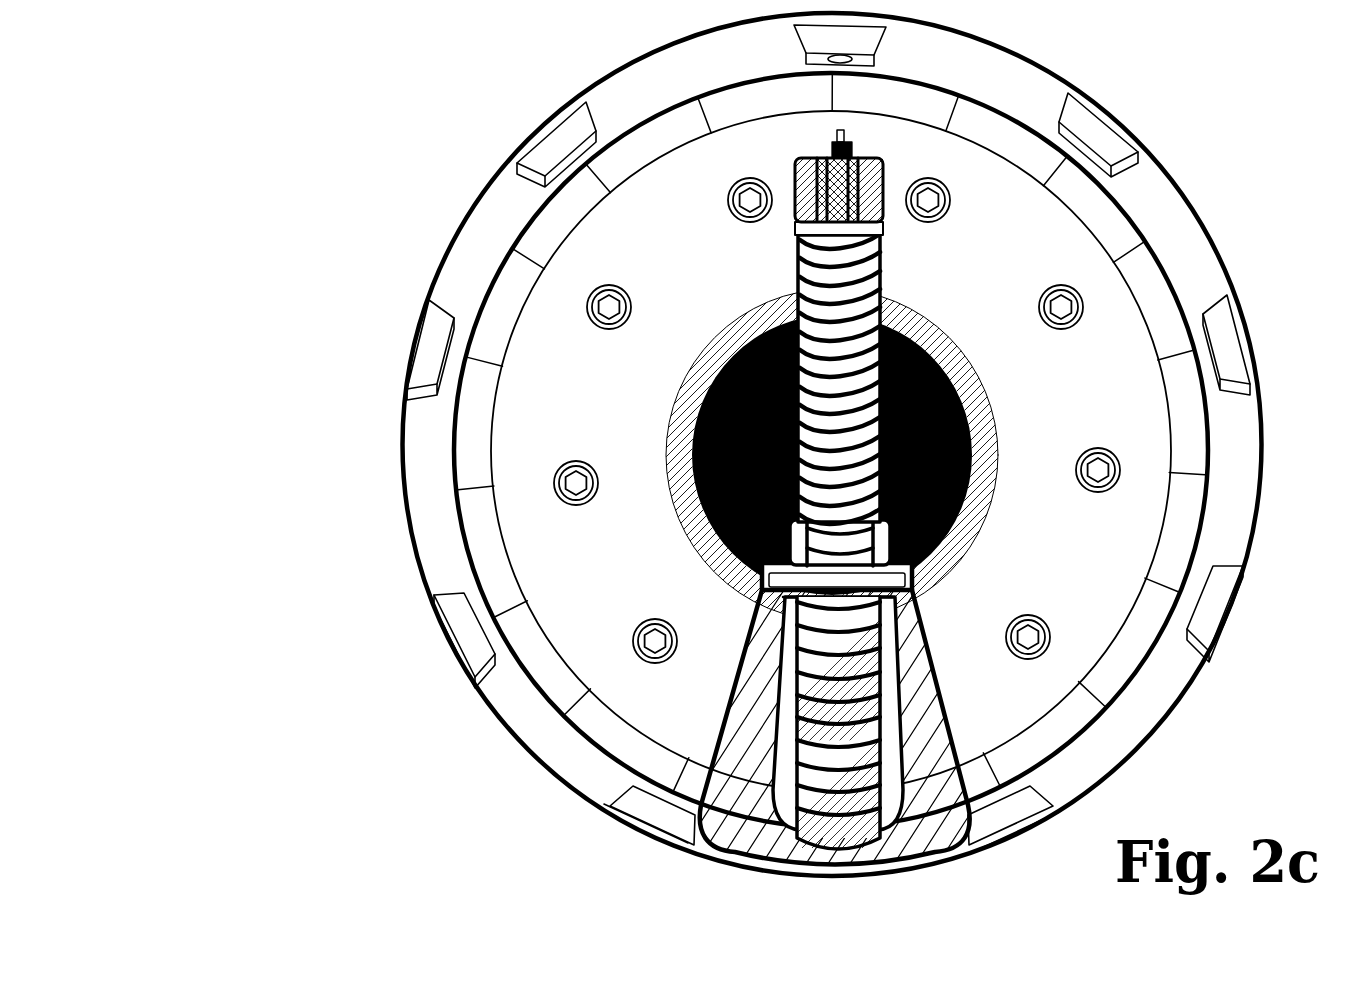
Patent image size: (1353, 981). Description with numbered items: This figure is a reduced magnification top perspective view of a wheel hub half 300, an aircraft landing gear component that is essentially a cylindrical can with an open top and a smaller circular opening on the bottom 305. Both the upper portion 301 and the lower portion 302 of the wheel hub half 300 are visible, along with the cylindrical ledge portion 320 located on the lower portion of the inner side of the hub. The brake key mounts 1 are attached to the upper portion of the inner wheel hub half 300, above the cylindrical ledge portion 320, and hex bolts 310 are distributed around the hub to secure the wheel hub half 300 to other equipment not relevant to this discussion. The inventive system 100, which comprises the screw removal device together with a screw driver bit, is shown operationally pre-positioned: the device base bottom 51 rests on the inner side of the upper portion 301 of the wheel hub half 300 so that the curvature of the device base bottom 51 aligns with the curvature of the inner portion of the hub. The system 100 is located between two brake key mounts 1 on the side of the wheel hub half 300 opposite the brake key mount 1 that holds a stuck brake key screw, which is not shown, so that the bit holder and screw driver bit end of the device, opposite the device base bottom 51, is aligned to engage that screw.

The wheel hub half 300 is at (372, 98).
The upper portion 301 is at (350, 273).
The cylindrical ledge portion 320 is at (1183, 221).
The lower portion 302 is at (1187, 519).
The brake key mounts 1 is at (828, 438).
The bottom 305 is at (715, 482).
The hex bolts 310 is at (631, 308).
The device base bottom 51 is at (829, 896).
The system 100 is at (766, 156).